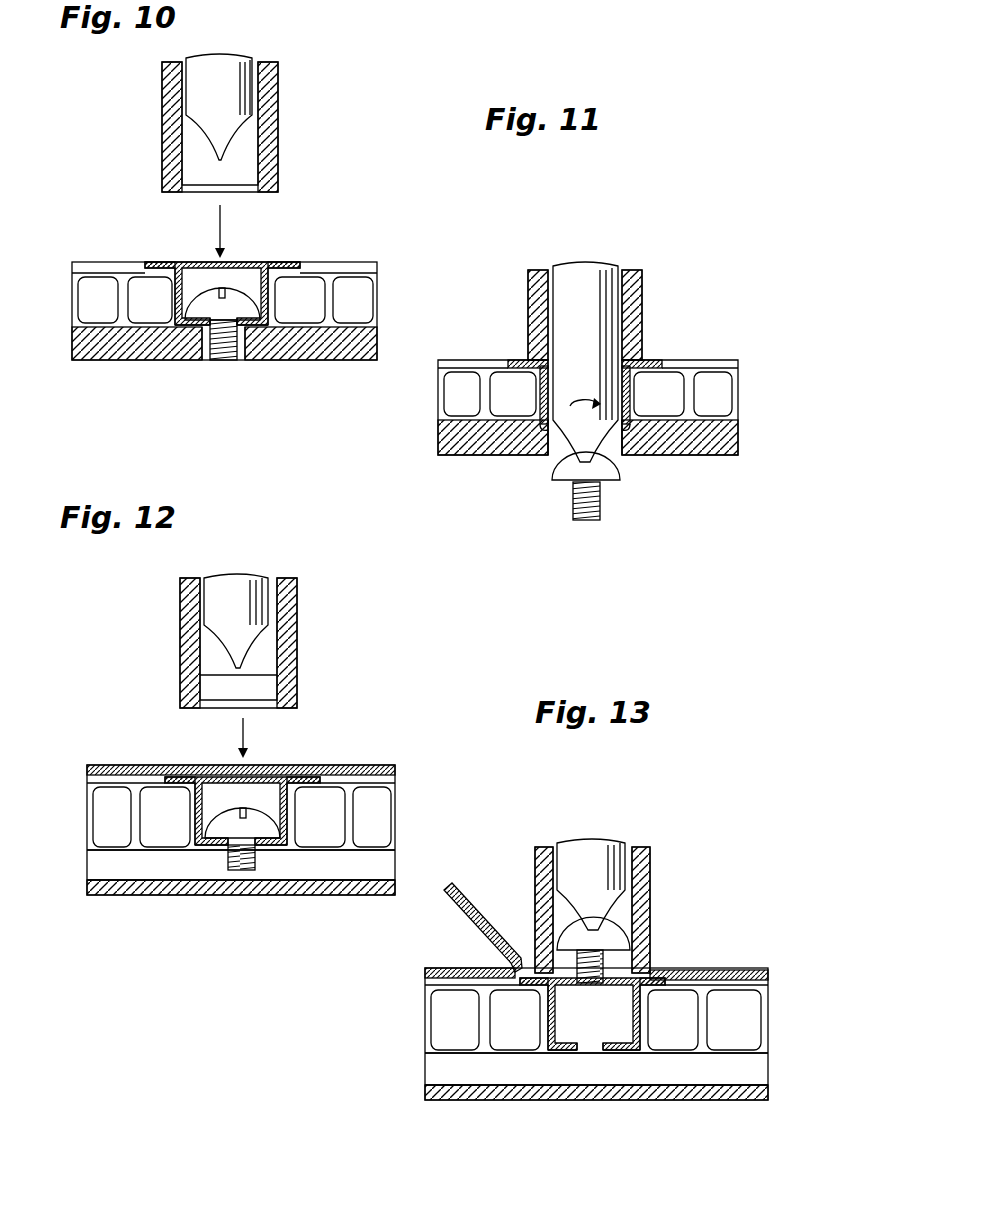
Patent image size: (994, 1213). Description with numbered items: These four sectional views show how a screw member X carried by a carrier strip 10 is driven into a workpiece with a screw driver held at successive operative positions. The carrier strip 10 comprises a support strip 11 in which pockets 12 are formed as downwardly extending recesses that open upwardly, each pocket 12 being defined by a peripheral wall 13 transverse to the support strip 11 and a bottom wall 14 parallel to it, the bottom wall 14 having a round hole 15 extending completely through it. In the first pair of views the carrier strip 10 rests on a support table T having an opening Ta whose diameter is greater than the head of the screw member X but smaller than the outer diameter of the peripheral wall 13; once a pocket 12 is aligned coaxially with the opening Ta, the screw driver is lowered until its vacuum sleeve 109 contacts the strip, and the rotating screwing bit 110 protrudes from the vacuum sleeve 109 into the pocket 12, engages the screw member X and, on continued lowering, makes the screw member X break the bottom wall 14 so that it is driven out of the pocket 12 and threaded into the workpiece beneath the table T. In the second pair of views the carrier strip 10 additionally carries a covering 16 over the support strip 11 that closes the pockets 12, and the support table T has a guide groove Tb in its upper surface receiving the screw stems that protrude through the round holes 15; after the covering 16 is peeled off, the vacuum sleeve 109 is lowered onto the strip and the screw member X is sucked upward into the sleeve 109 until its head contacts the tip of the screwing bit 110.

In FIG. 10, the carrier strip 10 is at (133, 256).
In FIG. 11, the carrier strip 10 is at (668, 350).
In FIG. 12, the carrier strip 10 is at (373, 818).
In FIG. 13, the carrier strip 10 is at (458, 1035).
In FIG. 10, the support strip 11 is at (290, 268).
In FIG. 11, the support strip 11 is at (520, 360).
In FIG. 12, the support strip 11 is at (305, 778).
In FIG. 13, the support strip 11 is at (592, 981).
In FIG. 10, the pocket 12 is at (190, 326).
In FIG. 11, the pocket 12 is at (575, 440).
In FIG. 12, the pocket 12 is at (243, 841).
In FIG. 13, the pocket 12 is at (608, 1074).
In FIG. 10, the peripheral wall 13 is at (178, 300).
In FIG. 11, the peripheral wall 13 is at (640, 400).
In FIG. 12, the peripheral wall 13 is at (290, 815).
In FIG. 13, the peripheral wall 13 is at (638, 1015).
In FIG. 10, the bottom wall 14 is at (190, 323).
In FIG. 12, the bottom wall 14 is at (262, 847).
In FIG. 13, the bottom wall 14 is at (615, 1050).
In FIG. 10, the round hole 15 is at (212, 327).
In FIG. 12, the round hole 15 is at (227, 846).
In FIG. 13, the round hole 15 is at (592, 1050).
In FIG. 12, the covering 16 is at (355, 768).
In FIG. 13, the covering 16 is at (463, 900).
In FIG. 10, the vacuum sleeve 109 is at (278, 100).
In FIG. 11, the vacuum sleeve 109 is at (642, 300).
In FIG. 12, the vacuum sleeve 109 is at (190, 645).
In FIG. 13, the vacuum sleeve 109 is at (650, 860).
In FIG. 10, the screwing bit 110 is at (205, 95).
In FIG. 11, the screwing bit 110 is at (583, 285).
In FIG. 12, the screwing bit 110 is at (220, 605).
In FIG. 13, the screwing bit 110 is at (600, 860).
In FIG. 10, the screw member X is at (240, 300).
In FIG. 11, the screw member X is at (610, 475).
In FIG. 12, the screw member X is at (210, 835).
In FIG. 13, the screw member X is at (610, 935).
In FIG. 10, the support table T is at (335, 345).
In FIG. 11, the support table T is at (725, 445).
In FIG. 12, the support table T is at (122, 878).
In FIG. 13, the support table T is at (460, 1090).
In FIG. 10, the opening Ta is at (247, 348).
In FIG. 11, the opening Ta is at (553, 442).
In FIG. 12, the guide groove Tb is at (100, 888).
In FIG. 13, the guide groove Tb is at (440, 1072).